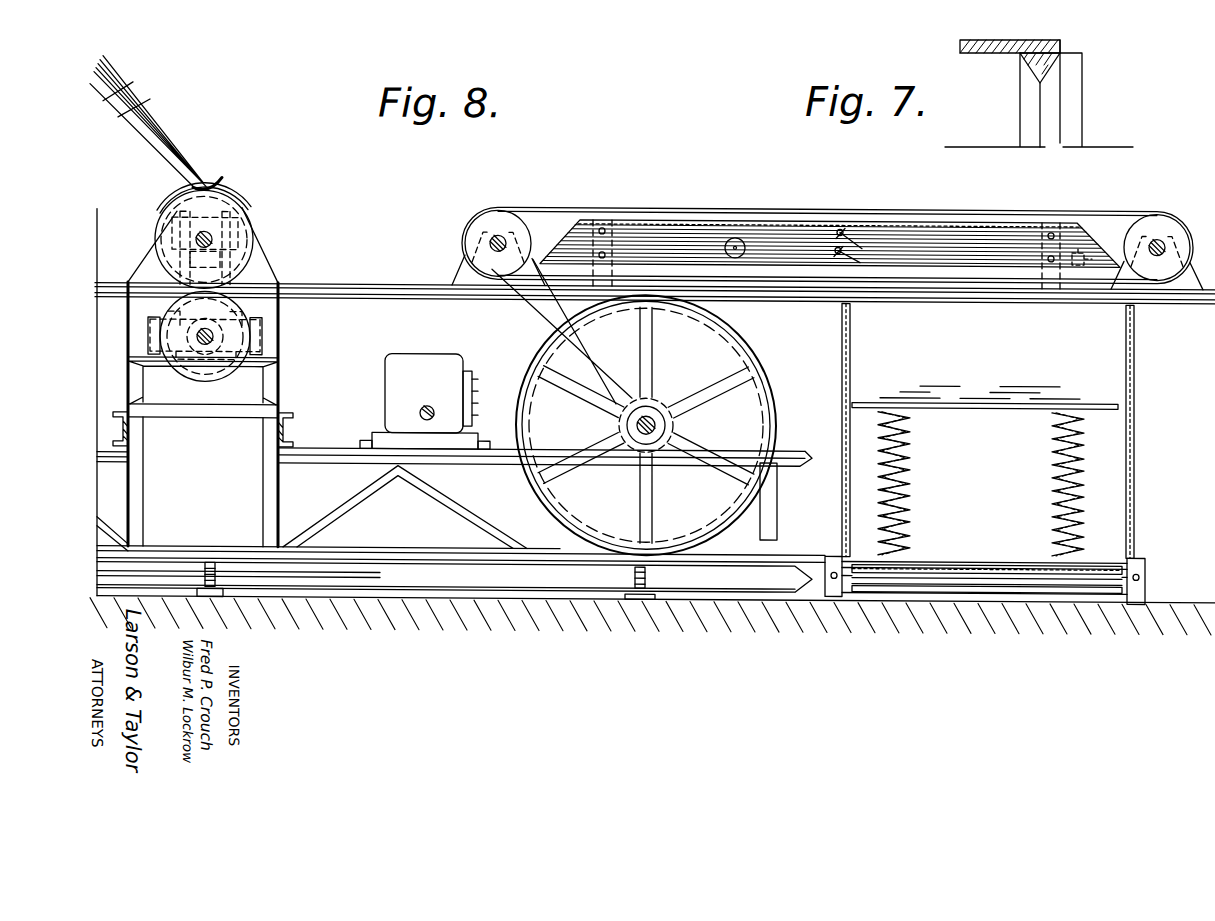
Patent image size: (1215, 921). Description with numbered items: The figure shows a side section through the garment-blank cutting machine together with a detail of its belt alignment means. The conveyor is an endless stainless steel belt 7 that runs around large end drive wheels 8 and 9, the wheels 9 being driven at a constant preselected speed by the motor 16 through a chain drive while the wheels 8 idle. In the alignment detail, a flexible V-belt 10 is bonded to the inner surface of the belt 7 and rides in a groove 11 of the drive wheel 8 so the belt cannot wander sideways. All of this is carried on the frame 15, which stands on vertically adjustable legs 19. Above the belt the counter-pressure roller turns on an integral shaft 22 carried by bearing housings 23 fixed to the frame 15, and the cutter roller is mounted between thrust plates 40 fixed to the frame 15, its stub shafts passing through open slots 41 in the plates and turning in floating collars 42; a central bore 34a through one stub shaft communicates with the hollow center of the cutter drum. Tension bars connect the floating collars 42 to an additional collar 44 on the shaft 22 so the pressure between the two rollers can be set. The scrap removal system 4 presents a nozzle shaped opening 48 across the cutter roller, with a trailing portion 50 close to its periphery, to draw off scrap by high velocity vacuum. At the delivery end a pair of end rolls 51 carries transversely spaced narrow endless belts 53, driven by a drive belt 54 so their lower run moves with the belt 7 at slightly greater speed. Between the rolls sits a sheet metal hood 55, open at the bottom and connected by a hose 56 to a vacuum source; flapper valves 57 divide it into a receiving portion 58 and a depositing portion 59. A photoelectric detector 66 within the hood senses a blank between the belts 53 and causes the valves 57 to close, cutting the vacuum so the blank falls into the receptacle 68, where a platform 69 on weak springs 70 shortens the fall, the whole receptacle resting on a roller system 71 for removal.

In FIG. 8, the scrap removal system 4 is at (170, 138).
In FIG. 8, the endless belt 7 is at (390, 297).
In FIG. 7, the endless belt 7 is at (1015, 40).
In FIG. 7, the drive wheel 8 is at (1070, 85).
In FIG. 8, the drive wheel 9 is at (528, 489).
In FIG. 7, the flexible V-belt 10 is at (1052, 48).
In FIG. 7, the groove 11 is at (1050, 117).
In FIG. 8, the frame 15 is at (272, 333).
In FIG. 8, the motor 16 is at (398, 361).
In FIG. 8, the vertically adjustable leg 19 is at (210, 588).
In FIG. 8, the shaft 22 is at (212, 335).
In FIG. 8, the bearing housing 23 is at (200, 346).
In FIG. 8, the central bore 34a is at (207, 236).
In FIG. 8, the thrust plate 40 is at (262, 272).
In FIG. 8, the open slot 41 is at (220, 262).
In FIG. 8, the floating collar 42 is at (240, 232).
In FIG. 8, the additional collar 44 is at (150, 325).
In FIG. 8, the nozzle shaped opening 48 is at (218, 178).
In FIG. 8, the trailing portion 50 is at (163, 204).
In FIG. 8, the end roll 51 is at (503, 227).
In FIG. 8, the narrow endless belt 53 is at (760, 207).
In FIG. 8, the drive belt 54 is at (536, 309).
In FIG. 8, the sheet metal hood 55 is at (690, 217).
In FIG. 8, the hose 56 is at (746, 245).
In FIG. 8, the flapper valve 57 is at (865, 253).
In FIG. 8, the receiving portion 58 is at (620, 237).
In FIG. 8, the depositing portion 59 is at (1005, 234).
In FIG. 8, the photoelectric detector 66 is at (1088, 246).
In FIG. 8, the receptacle 68 is at (1135, 357).
In FIG. 8, the platform 69 is at (990, 406).
In FIG. 8, the weak spring 70 is at (1050, 496).
In FIG. 8, the roller system 71 is at (1135, 553).